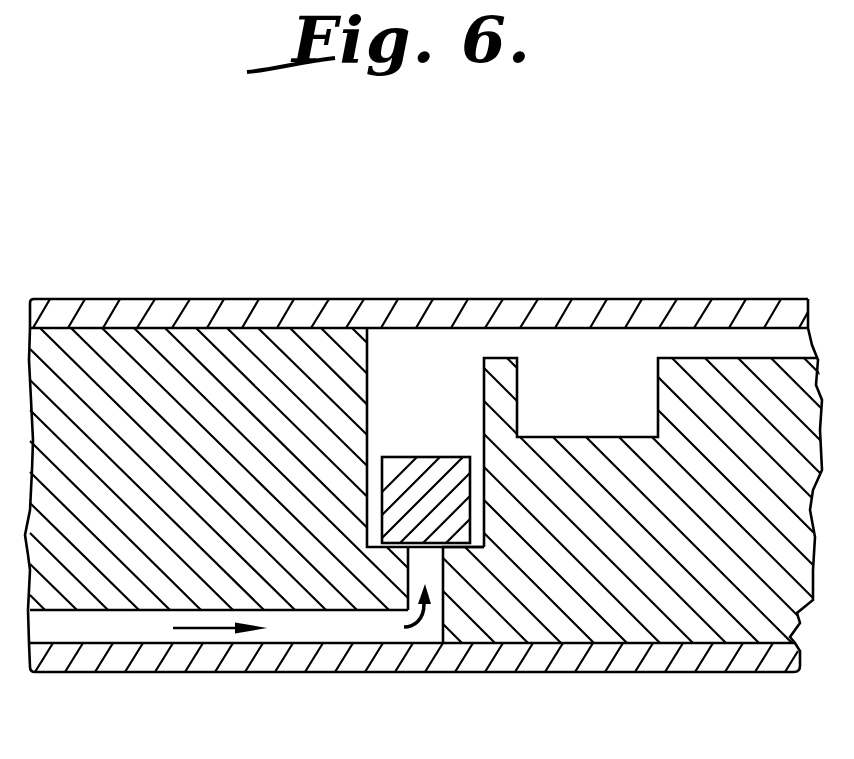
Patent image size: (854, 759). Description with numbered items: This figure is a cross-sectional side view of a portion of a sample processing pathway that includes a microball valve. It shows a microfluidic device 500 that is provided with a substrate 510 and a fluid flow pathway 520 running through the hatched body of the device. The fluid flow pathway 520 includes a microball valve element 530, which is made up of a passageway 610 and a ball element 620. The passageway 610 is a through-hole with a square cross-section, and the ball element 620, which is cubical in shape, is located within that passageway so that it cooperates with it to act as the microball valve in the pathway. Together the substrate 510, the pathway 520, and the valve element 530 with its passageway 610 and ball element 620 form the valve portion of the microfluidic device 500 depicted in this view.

The microfluidic device 500 is at (277, 277).
The substrate 510 is at (700, 488).
The fluid flow pathway 520 is at (155, 623).
The microball valve element 530 is at (362, 503).
The passageway 610 is at (370, 369).
The ball element 620 is at (470, 525).